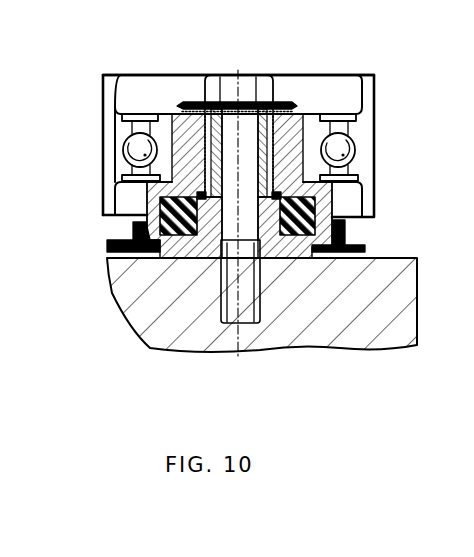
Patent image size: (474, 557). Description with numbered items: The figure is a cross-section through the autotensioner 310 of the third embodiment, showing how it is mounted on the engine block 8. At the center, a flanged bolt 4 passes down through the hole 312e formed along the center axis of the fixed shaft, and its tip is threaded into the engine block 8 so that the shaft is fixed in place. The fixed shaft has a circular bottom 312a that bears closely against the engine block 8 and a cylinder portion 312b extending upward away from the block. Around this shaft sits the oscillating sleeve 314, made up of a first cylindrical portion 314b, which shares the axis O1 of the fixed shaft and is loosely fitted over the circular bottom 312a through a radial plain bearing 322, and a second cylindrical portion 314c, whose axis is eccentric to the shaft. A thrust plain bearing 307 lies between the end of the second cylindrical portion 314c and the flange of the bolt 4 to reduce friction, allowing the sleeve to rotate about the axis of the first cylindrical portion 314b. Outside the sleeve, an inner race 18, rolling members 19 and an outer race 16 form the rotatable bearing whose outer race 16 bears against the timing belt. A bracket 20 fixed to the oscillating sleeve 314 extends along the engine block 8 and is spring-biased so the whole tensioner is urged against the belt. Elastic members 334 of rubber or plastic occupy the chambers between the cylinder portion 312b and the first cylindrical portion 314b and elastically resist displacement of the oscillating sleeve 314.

The autotensioner 310 is at (216, 58).
The thrust plain bearing 307 is at (200, 105).
The axis O1 is at (238, 70).
The flanged bolt 4 is at (249, 78).
The cylinder portion 312b is at (265, 125).
The second cylindrical portion 314c is at (182, 133).
The rolling members 19 is at (345, 145).
The outer race 16 is at (368, 153).
The inner race 18 is at (357, 177).
The radial plain bearing 322 is at (178, 176).
The first cylindrical portion 314b is at (325, 214).
The bracket 20 is at (366, 246).
The elastic members 334 is at (150, 266).
The engine block 8 is at (402, 312).
The circular bottom 312a is at (185, 265).
The hole 312e is at (268, 230).
The oscillating sleeve 314 is at (344, 262).